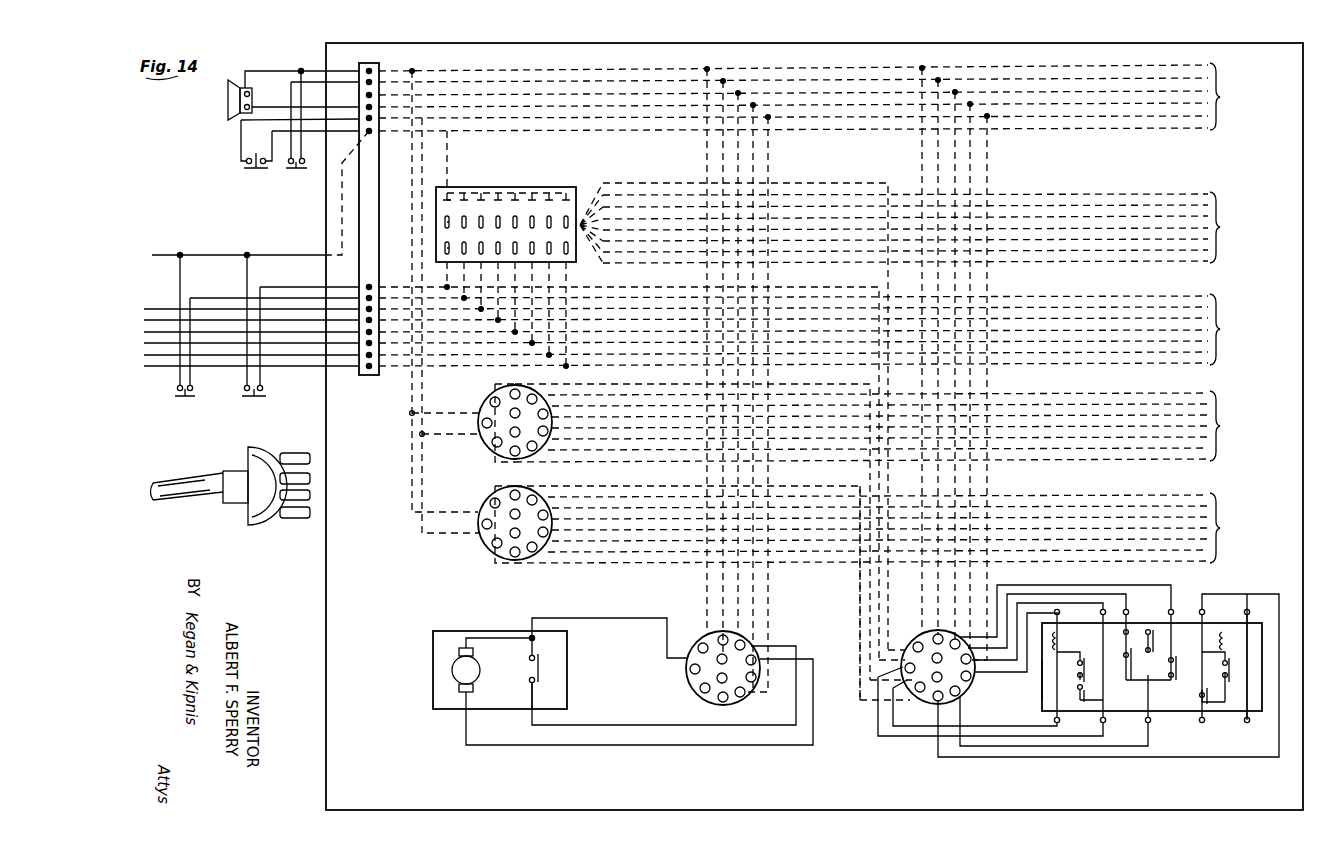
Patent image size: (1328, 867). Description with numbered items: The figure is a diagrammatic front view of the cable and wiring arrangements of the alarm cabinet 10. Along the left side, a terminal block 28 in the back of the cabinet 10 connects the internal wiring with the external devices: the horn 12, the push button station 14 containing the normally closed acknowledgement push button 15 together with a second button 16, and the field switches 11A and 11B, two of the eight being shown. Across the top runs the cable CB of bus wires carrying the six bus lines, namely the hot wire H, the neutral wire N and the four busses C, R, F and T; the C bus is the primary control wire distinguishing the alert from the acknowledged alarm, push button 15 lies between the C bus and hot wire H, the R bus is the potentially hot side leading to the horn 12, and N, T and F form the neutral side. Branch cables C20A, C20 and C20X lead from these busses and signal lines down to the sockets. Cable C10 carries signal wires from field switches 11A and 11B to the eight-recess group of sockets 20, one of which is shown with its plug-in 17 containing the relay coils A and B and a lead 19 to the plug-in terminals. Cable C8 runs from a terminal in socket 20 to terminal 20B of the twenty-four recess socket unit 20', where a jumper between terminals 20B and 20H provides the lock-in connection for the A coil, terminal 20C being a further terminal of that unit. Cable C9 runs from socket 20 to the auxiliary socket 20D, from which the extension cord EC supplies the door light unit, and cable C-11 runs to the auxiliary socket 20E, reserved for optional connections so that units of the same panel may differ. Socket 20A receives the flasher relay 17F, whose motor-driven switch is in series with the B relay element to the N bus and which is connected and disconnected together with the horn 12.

The cabinet 10 is at (326, 569).
The field switch 11A is at (243, 400).
The field switch 11B is at (176, 400).
The horn 12 is at (228, 100).
The push button station 14 is at (246, 136).
The acknowledgement push button 15 is at (246, 172).
The switch 16 is at (288, 172).
The plug-in unit 17 is at (1152, 677).
The flasher relay 17F is at (433, 656).
The control box lead 19 is at (1020, 660).
The socket 20 is at (948, 675).
The socket unit 20' is at (506, 207).
The flasher relay socket 20A is at (693, 692).
The socket terminal 20B is at (447, 222).
The socket terminal 20C is at (447, 248).
The auxiliary socket 20D is at (490, 400).
The auxiliary socket 20E is at (490, 498).
The socket terminal 20H is at (447, 200).
The terminal block 28 is at (360, 377).
The extension cord EC is at (178, 502).
The cable of bus wires CB is at (813, 97).
The cable C8 is at (913, 416).
The cable C9 is at (880, 532).
The cable of signal wires C10 is at (817, 473).
The cable C-11 is at (888, 593).
The cable C20 is at (920, 160).
The cable C20A is at (702, 160).
The cable C20X is at (890, 604).
The neutral wire N is at (722, 66).
The T bus T is at (762, 80).
The F bus F is at (800, 92).
The R bus R is at (836, 104).
The C bus C is at (872, 116).
The hot wire H is at (906, 128).
The A coil A is at (1065, 642).
The B relay B is at (1231, 642).